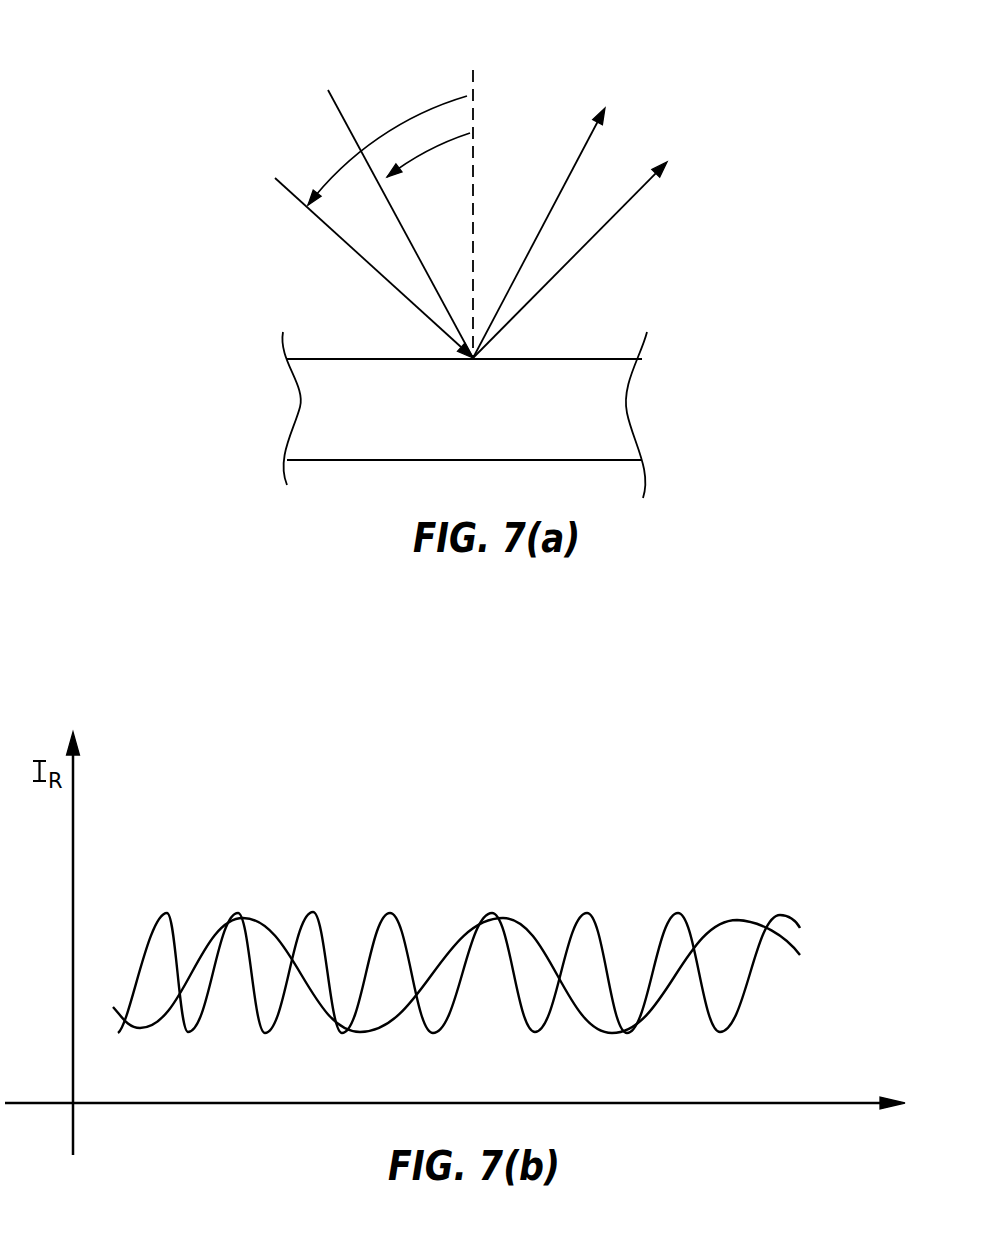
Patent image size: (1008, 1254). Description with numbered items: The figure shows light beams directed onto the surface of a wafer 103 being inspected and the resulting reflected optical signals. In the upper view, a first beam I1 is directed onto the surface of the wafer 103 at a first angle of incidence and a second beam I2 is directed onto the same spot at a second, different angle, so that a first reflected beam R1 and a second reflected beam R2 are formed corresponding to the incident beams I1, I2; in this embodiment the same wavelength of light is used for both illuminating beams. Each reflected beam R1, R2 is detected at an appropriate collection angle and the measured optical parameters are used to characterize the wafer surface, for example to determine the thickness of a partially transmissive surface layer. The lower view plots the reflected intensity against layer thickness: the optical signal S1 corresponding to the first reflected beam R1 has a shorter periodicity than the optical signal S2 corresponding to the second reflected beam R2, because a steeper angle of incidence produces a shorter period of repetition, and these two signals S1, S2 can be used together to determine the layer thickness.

In FIG. 7A, the wafer 103 is at (607, 420).
In FIG. 7A, the first beam I1 is at (344, 117).
In FIG. 7A, the second beam I2 is at (275, 178).
In FIG. 7A, the first reflected beam R1 is at (579, 157).
In FIG. 7A, the second reflected beam R2 is at (600, 230).
In FIG. 7B, the optical signal corresponding to the first reflected beam S1 is at (797, 924).
In FIG. 7B, the optical signal corresponding to the second reflected beam S2 is at (797, 952).